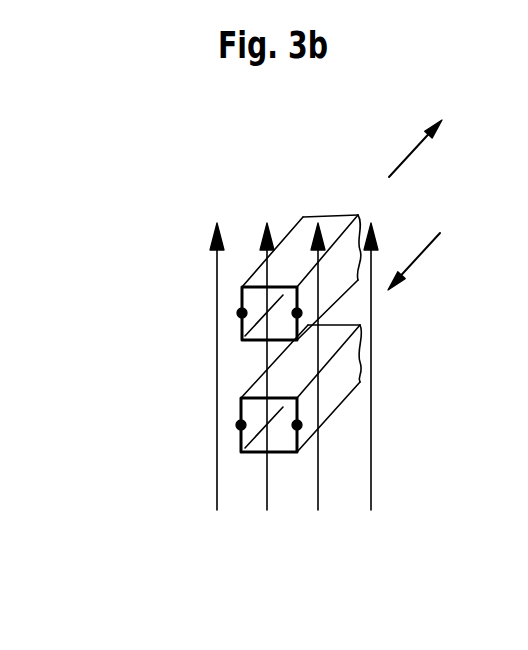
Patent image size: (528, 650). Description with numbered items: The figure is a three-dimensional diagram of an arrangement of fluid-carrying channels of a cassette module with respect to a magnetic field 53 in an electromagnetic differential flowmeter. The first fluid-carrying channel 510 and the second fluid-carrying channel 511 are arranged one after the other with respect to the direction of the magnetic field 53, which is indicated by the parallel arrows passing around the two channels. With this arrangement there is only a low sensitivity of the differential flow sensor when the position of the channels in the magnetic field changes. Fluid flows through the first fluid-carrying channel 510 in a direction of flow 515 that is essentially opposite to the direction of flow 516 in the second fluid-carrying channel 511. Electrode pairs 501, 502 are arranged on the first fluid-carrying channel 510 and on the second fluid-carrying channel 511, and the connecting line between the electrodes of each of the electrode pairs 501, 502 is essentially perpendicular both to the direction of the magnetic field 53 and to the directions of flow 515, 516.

The magnetic field 53 is at (267, 480).
The first fluid-carrying channel 510 is at (257, 287).
The second fluid-carrying channel 511 is at (257, 398).
The electrode pair 502 is at (297, 313).
The electrode pair 501 is at (297, 425).
The direction of flow 515 is at (402, 160).
The direction of flow 516 is at (428, 253).